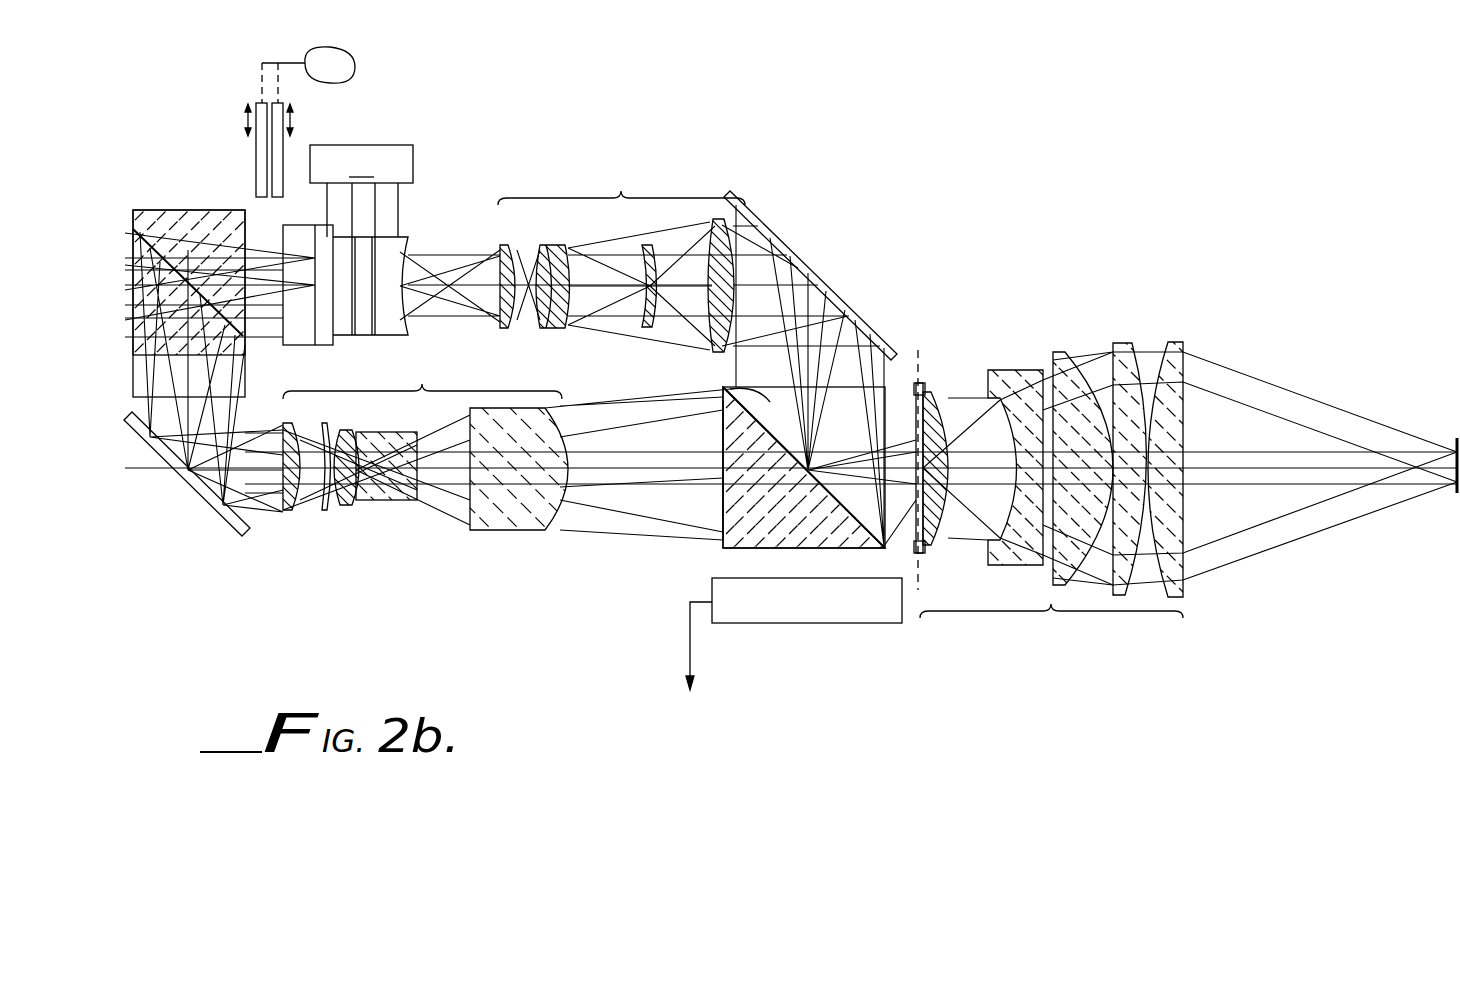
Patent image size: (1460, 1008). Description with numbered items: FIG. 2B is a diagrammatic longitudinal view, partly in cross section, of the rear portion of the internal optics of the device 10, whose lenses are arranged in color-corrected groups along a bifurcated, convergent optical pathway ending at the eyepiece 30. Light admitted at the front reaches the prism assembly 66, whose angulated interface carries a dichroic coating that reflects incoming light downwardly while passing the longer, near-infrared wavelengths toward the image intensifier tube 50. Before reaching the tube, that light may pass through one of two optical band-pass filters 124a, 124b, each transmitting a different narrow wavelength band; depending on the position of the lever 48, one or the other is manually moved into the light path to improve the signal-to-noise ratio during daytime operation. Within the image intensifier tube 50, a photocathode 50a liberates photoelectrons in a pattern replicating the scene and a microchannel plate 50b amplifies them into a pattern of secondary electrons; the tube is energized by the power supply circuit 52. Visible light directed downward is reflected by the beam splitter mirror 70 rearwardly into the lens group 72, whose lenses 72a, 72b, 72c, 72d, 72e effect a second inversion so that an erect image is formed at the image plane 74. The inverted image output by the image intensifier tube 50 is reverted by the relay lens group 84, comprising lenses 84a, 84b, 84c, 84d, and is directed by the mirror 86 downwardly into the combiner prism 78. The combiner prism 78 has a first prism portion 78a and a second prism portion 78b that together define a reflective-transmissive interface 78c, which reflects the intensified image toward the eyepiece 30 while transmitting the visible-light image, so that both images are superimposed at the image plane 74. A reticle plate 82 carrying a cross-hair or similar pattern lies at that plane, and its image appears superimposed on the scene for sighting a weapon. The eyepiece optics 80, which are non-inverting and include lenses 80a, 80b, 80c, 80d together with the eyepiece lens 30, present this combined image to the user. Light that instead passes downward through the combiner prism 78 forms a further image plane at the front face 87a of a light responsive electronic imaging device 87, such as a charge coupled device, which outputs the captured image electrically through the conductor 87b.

The device 10 is at (705, 143).
The lever 48 is at (338, 54).
The optical band-pass filter 124a is at (258, 104).
The optical band-pass filter 124b is at (286, 106).
The prism assembly 66 is at (186, 209).
The beam splitter mirror 70 is at (190, 488).
The image intensifier tube 50 is at (378, 284).
The photocathode 50a is at (283, 232).
The microchannel plate 50b is at (412, 238).
The power supply circuit 52 is at (361, 191).
The lens group 72 is at (402, 475).
The lens 72a is at (290, 512).
The lens 72b is at (328, 512).
The lens 72c is at (349, 507).
The lens 72d is at (396, 502).
The lens 72e is at (515, 532).
The relay lens group 84 is at (597, 277).
The lens 84a is at (507, 330).
The lens 84b is at (551, 330).
The lens 84c is at (650, 330).
The lens 84d is at (712, 350).
The mirror 86 is at (805, 268).
The combiner prism 78 is at (770, 473).
The first prism portion 78a is at (723, 432).
The second prism portion 78b is at (729, 390).
The reflective-transmissive interface 78c is at (836, 486).
The reticle plate 82 is at (916, 542).
The image plane 74 is at (926, 358).
The eyepiece optics 80 is at (1052, 476).
The lens 80a is at (944, 428).
The lens 80b is at (1026, 371).
The lens 80c is at (1059, 351).
The lens 80d is at (1122, 343).
The eyepiece lens 30 is at (1184, 343).
The light responsive electronic imaging device 87 is at (845, 623).
The front face 87a is at (727, 578).
The conductor 87b is at (688, 641).